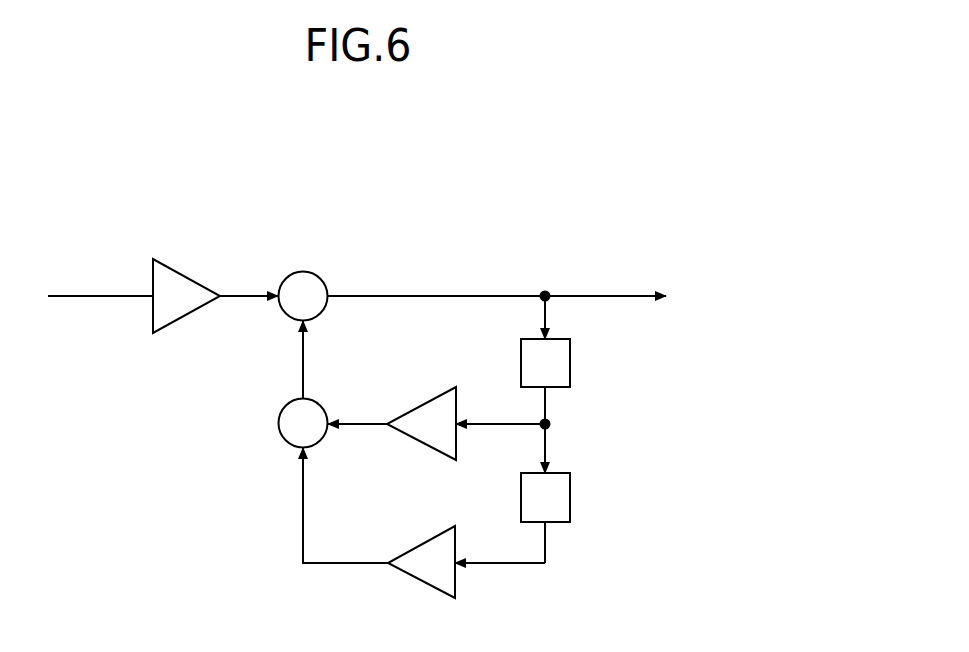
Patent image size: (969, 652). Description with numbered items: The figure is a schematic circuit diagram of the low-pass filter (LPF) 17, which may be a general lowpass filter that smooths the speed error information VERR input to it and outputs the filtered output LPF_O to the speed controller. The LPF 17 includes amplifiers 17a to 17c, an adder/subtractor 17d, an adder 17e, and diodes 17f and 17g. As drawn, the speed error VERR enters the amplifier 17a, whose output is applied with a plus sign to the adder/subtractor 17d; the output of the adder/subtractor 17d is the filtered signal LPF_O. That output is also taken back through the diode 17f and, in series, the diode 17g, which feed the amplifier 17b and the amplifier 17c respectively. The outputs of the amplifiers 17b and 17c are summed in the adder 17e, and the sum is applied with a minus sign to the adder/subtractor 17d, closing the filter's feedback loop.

The low-pass filter (LPF) 17 is at (597, 184).
The amplifier 17a is at (185, 278).
The amplifier 17b is at (434, 396).
The amplifier 17c is at (434, 536).
The adder/subtractor 17d is at (301, 251).
The adder 17e is at (320, 405).
The diode 17f is at (571, 362).
The diode 17g is at (571, 497).